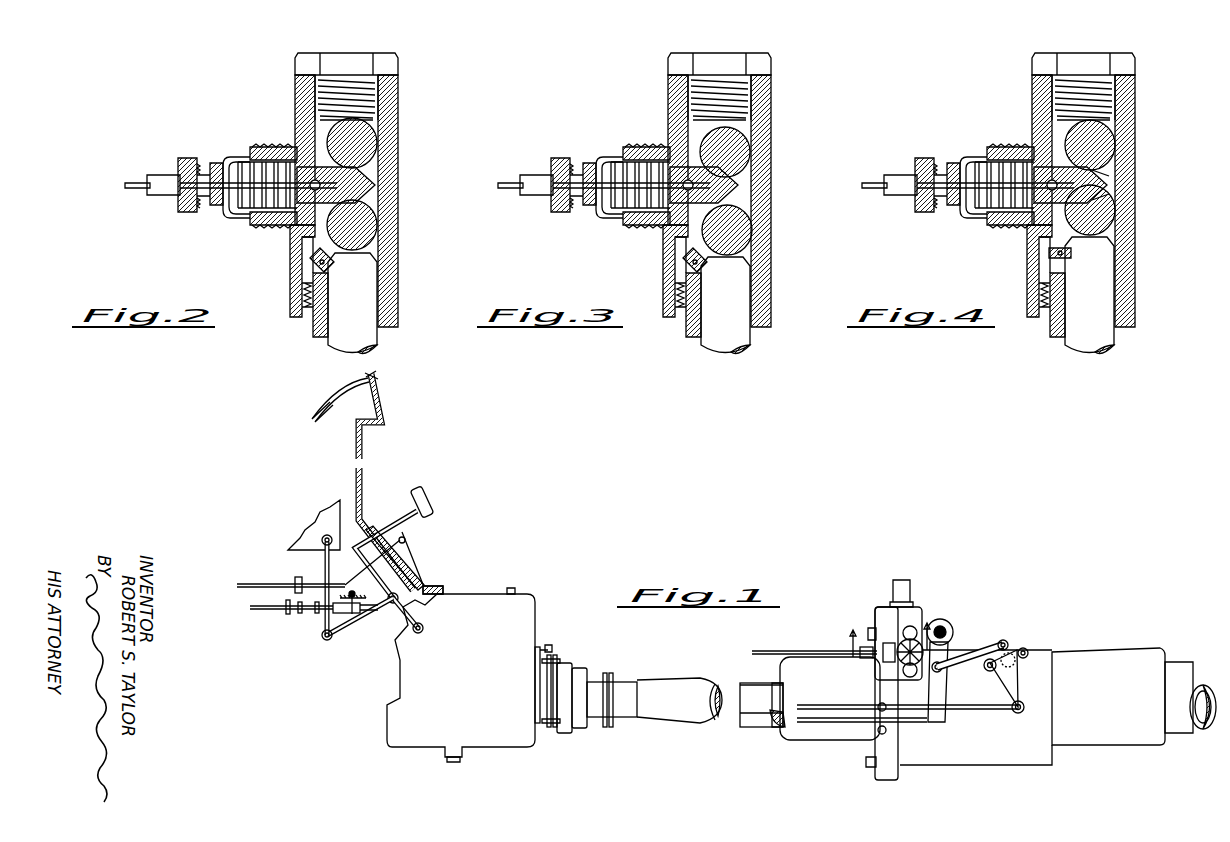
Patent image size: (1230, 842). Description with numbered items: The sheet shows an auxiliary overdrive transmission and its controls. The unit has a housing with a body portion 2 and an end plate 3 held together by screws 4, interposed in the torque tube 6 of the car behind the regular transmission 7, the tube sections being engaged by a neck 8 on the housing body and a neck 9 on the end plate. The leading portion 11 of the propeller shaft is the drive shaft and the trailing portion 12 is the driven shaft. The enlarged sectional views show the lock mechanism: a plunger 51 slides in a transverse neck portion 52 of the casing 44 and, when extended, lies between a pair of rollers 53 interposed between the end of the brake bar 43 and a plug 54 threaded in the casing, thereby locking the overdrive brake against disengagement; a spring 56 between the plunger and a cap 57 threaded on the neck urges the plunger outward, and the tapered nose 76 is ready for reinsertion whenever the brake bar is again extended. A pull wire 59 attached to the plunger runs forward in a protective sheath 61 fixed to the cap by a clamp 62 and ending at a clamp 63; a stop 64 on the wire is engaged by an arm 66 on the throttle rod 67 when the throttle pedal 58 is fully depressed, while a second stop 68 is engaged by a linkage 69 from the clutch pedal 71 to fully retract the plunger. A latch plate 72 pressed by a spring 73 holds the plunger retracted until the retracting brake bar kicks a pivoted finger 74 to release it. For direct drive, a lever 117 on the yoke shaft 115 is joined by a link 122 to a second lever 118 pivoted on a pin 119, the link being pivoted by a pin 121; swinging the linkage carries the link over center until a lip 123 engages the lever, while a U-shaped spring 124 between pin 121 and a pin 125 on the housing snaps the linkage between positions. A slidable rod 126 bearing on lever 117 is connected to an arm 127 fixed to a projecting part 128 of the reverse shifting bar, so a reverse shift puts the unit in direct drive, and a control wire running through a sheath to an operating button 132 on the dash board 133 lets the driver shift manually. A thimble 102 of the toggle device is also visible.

In FIG. 1, the body portion 2 is at (1000, 775).
In FIG. 1, the end plate 3 is at (880, 776).
In FIG. 1, the screws 4 is at (866, 762).
In FIG. 1, the torque tube 6 is at (686, 712).
In FIG. 1, the regular transmission 7 is at (412, 748).
In FIG. 1, the neck 8 is at (1130, 668).
In FIG. 1, the neck 9 is at (822, 676).
In FIG. 1, the leading portion of propeller shaft 11 is at (750, 715).
In FIG. 1, the trailing portion of propeller shaft 12 is at (1208, 728).
In FIG. 2, the brake bar 43 is at (358, 292).
In FIG. 3, the brake bar 43 is at (754, 305).
In FIG. 4, the brake bar 43 is at (1118, 295).
In FIG. 2, the casing 44 is at (386, 240).
In FIG. 3, the casing 44 is at (735, 201).
In FIG. 4, the casing 44 is at (1099, 201).
In FIG. 2, the plunger 51 is at (372, 186).
In FIG. 3, the plunger 51 is at (738, 185).
In FIG. 4, the plunger 51 is at (1103, 185).
In FIG. 2, the transverse neck portion 52 is at (282, 150).
In FIG. 3, the transverse neck portion 52 is at (626, 186).
In FIG. 4, the transverse neck portion 52 is at (990, 186).
In FIG. 2, the rollers 53 is at (365, 135).
In FIG. 3, the rollers 53 is at (722, 186).
In FIG. 4, the rollers 53 is at (1082, 175).
In FIG. 2, the plug 54 is at (376, 88).
In FIG. 3, the plug 54 is at (737, 86).
In FIG. 4, the plug 54 is at (1102, 86).
In FIG. 1, the plug 54 is at (922, 625).
In FIG. 2, the spring 56 is at (256, 165).
In FIG. 3, the spring 56 is at (624, 201).
In FIG. 4, the spring 56 is at (982, 201).
In FIG. 2, the cap 57 is at (226, 160).
In FIG. 3, the cap 57 is at (609, 187).
In FIG. 4, the cap 57 is at (973, 187).
In FIG. 1, the throttle pedal 58 is at (408, 560).
In FIG. 2, the pull wire 59 is at (135, 190).
In FIG. 3, the pull wire 59 is at (510, 164).
In FIG. 4, the pull wire 59 is at (876, 164).
In FIG. 2, the protective sheath 61 is at (162, 180).
In FIG. 3, the protective sheath 61 is at (611, 199).
In FIG. 4, the protective sheath 61 is at (975, 199).
In FIG. 2, the clamp 62 is at (192, 212).
In FIG. 3, the clamp 62 is at (567, 185).
In FIG. 4, the clamp 62 is at (931, 185).
In FIG. 1, the clamp 63 is at (352, 616).
In FIG. 1, the stop 64 is at (288, 614).
In FIG. 1, the arm 66 is at (300, 613).
In FIG. 1, the throttle rod 67 is at (262, 585).
In FIG. 1, the stop 68 is at (317, 613).
In FIG. 1, the linkage 69 is at (325, 568).
In FIG. 1, the clutch pedal 71 is at (428, 498).
In FIG. 2, the latch plate 72 is at (296, 235).
In FIG. 3, the latch plate 72 is at (665, 282).
In FIG. 4, the latch plate 72 is at (1028, 282).
In FIG. 2, the spring 73 is at (304, 297).
In FIG. 3, the spring 73 is at (668, 310).
In FIG. 4, the spring 73 is at (1035, 310).
In FIG. 2, the pivoted finger 74 is at (312, 257).
In FIG. 3, the pivoted finger 74 is at (666, 260).
In FIG. 4, the pivoted finger 74 is at (1028, 258).
In FIG. 4, the tapered nose 76 is at (1132, 178).
In FIG. 1, the thimble 102 is at (906, 582).
In FIG. 1, the shaft 115 is at (950, 625).
In FIG. 1, the lever 117 is at (944, 672).
In FIG. 1, the lever 118 is at (1015, 678).
In FIG. 1, the pin 119 is at (989, 671).
In FIG. 1, the pin 121 is at (1008, 642).
In FIG. 1, the link 122 is at (985, 652).
In FIG. 1, the lip 123 is at (1003, 640).
In FIG. 1, the U-shaped spring 124 is at (1016, 660).
In FIG. 1, the pin 125 is at (1030, 650).
In FIG. 1, the slidable rod 126 is at (575, 728).
In FIG. 1, the arm 127 is at (556, 660).
In FIG. 1, the projecting part 128 is at (548, 646).
In FIG. 1, the operating button 132 is at (380, 376).
In FIG. 1, the dash board 133 is at (384, 422).